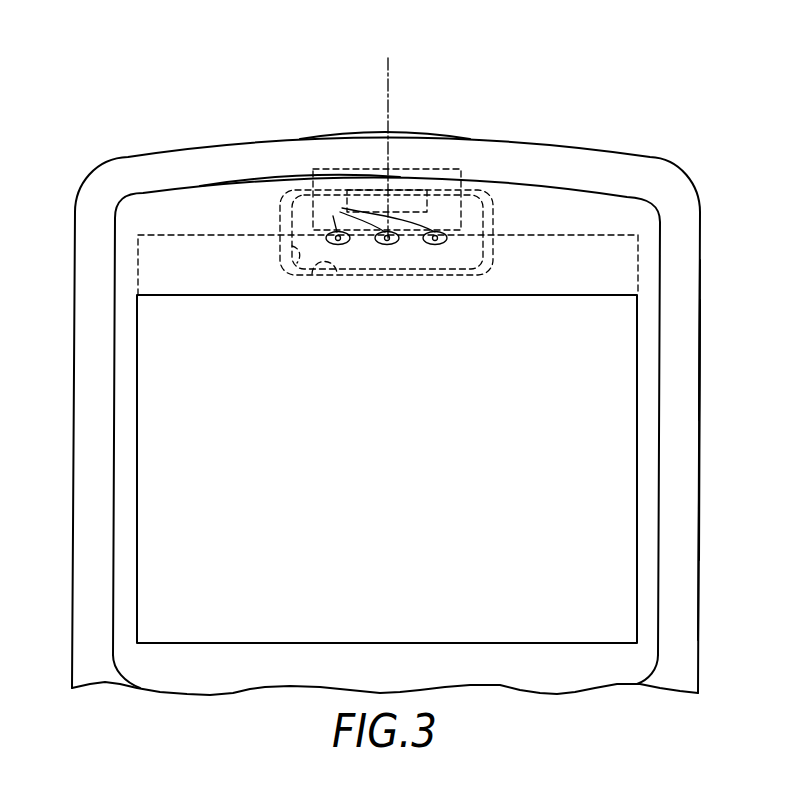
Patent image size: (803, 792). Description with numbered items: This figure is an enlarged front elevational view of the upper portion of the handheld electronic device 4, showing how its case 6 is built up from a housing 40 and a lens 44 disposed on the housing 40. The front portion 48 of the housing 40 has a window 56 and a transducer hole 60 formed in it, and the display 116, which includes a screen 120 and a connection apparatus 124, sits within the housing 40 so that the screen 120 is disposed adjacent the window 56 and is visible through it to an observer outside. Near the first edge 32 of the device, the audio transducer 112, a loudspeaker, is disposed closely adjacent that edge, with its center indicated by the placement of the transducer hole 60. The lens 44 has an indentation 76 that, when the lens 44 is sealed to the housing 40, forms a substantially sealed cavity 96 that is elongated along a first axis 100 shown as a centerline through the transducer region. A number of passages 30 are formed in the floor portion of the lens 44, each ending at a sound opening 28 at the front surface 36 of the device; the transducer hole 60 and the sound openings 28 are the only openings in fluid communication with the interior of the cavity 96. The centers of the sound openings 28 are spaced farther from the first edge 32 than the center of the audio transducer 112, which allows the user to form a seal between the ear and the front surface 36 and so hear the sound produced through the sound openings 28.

The handheld electronic device 4 is at (553, 125).
The case 6 is at (708, 484).
The sound openings 28 is at (340, 246).
The passages 30 is at (378, 211).
The first edge 32 is at (410, 137).
The front surface 36 is at (232, 203).
The housing 40 is at (708, 412).
The lens 44 is at (612, 208).
The front portion 48 is at (687, 553).
The window 56 is at (640, 338).
The transducer hole 60 is at (425, 217).
The indentation 76 is at (337, 274).
The cavity 96 is at (283, 249).
The first axis 100 is at (390, 78).
The audio transducer 112 is at (437, 173).
The display 116 is at (148, 351).
The screen 120 is at (157, 448).
The connection apparatus 124 is at (202, 232).